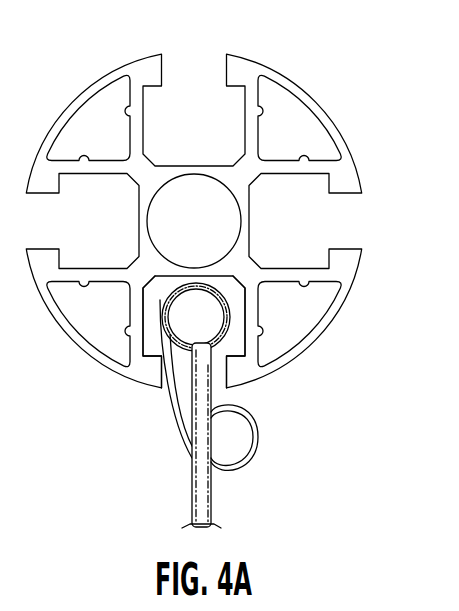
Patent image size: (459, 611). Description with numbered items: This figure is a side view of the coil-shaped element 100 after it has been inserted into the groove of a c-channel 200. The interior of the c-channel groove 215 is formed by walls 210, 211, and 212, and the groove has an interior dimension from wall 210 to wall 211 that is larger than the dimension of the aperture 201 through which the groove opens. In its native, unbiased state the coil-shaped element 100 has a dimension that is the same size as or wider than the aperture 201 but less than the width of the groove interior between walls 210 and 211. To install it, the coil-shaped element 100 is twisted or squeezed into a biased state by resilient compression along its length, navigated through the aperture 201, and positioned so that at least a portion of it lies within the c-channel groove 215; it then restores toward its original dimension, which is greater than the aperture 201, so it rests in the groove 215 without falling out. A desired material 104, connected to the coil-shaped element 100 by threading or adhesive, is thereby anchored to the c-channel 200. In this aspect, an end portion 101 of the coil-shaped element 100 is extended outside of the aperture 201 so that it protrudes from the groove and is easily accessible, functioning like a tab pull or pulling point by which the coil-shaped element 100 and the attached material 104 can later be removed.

The c-channel 200 is at (305, 71).
The wall 212 is at (193, 269).
The wall 210 is at (137, 306).
The wall 211 is at (253, 305).
The c-channel groove 215 is at (157, 327).
The aperture 201 is at (217, 376).
The coil-shaped element 100 is at (217, 295).
The material 104 is at (205, 508).
The end portion 101 is at (260, 440).